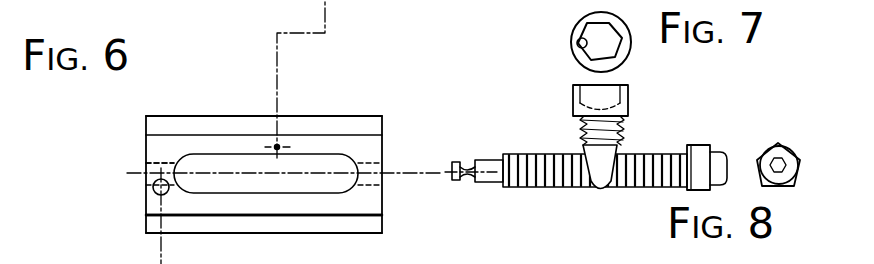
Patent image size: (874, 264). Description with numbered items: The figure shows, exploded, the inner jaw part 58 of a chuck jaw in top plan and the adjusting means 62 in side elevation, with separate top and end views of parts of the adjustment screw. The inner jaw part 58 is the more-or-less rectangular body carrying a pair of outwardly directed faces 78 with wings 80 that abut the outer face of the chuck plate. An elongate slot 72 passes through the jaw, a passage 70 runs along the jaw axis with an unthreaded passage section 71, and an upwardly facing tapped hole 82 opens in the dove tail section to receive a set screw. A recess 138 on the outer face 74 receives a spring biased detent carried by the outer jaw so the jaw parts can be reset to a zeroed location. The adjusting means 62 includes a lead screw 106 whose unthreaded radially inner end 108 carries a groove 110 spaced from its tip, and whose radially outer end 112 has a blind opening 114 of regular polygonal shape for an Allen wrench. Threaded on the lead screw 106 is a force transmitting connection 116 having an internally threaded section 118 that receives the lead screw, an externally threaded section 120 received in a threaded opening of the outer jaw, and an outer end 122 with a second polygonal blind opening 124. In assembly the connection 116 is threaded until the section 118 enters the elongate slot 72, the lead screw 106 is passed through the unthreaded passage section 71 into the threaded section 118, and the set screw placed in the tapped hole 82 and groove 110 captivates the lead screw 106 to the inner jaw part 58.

In FIG. 6, the inner jaw part 58 is at (399, 109).
In FIG. 8, the adjusting means 62 is at (706, 124).
In FIG. 6, the passage 70 is at (373, 183).
In FIG. 6, the unthreaded passage section 71 is at (152, 167).
In FIG. 6, the elongate slot 72 is at (313, 160).
In FIG. 6, the outer face 74 is at (290, 202).
In FIG. 6, the outwardly directed faces 78 is at (173, 125).
In FIG. 6, the wings 80 is at (367, 233).
In FIG. 6, the tapped hole 82 is at (155, 193).
In FIG. 8, the lead screw 106 is at (565, 183).
In FIG. 8, the unthreaded radially inner end 108 is at (497, 159).
In FIG. 8, the groove 110 is at (464, 177).
In FIG. 8, the radially outer end 112 is at (707, 145).
In FIG. 8, the blind opening 114 is at (787, 164).
In FIG. 8, the force transmitting connection 116 is at (627, 140).
In FIG. 8, the internally threaded section 118 is at (597, 188).
In FIG. 8, the externally threaded section 120 is at (582, 128).
In FIG. 7, the outer end 122 is at (578, 27).
In FIG. 8, the outer end 122 is at (573, 92).
In FIG. 7, the blind opening 124 is at (577, 44).
In FIG. 6, the recess 138 is at (283, 146).